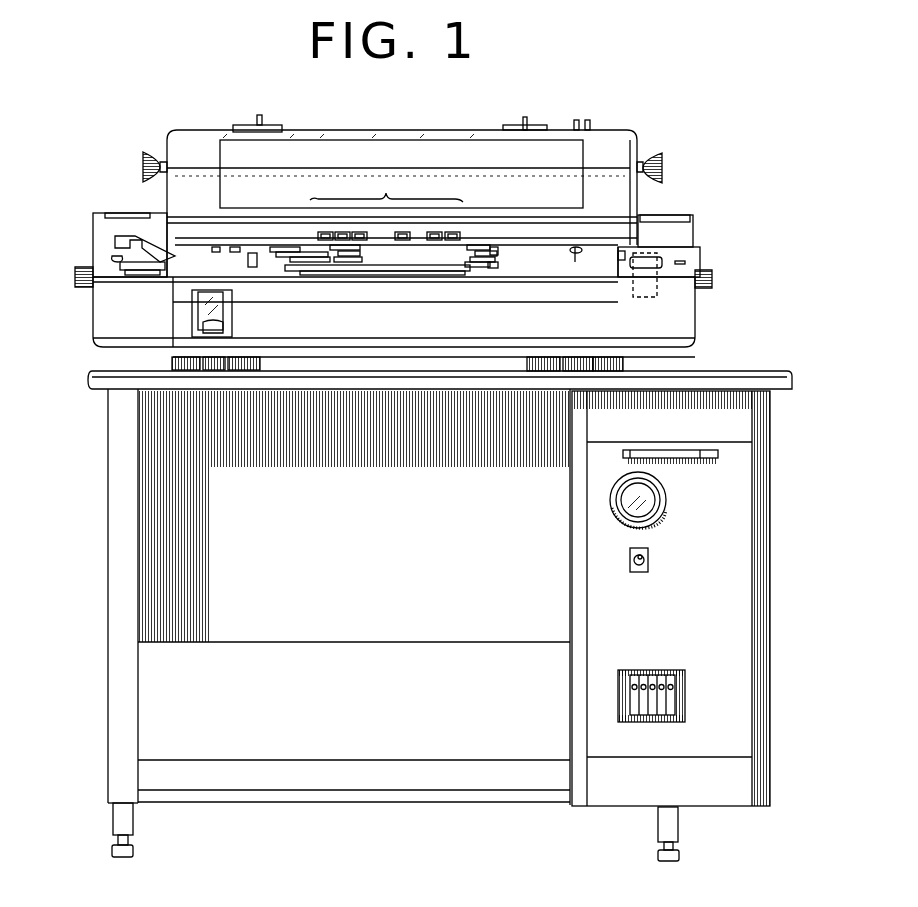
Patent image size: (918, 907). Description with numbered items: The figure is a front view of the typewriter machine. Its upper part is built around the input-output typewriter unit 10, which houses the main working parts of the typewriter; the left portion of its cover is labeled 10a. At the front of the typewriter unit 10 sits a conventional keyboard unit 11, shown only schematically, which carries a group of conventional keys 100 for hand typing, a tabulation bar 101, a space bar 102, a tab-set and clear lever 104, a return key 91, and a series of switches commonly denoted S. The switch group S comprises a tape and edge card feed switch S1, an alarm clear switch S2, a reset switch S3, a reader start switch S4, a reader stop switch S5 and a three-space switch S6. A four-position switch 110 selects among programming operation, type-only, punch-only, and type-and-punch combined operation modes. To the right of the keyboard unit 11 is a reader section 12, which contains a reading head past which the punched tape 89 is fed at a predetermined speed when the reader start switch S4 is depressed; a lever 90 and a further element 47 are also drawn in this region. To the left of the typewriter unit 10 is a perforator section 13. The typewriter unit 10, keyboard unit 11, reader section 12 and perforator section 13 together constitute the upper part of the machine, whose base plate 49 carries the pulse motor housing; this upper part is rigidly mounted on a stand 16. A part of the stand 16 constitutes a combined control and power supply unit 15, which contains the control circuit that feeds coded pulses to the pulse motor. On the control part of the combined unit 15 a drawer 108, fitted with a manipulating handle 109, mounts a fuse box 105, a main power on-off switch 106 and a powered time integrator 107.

The input-output typewriter unit 10 is at (643, 138).
The typewriter upper housing 10a is at (191, 143).
The keyboard unit 11 is at (547, 270).
The reader section 12 is at (680, 324).
The perforator section 13 is at (103, 240).
The combined control and power supply unit 15 is at (607, 808).
The stand 16 is at (108, 636).
The type bar segment 47 is at (496, 250).
The base plate 49 is at (173, 357).
The punched tape 89 is at (645, 295).
The lever 90 is at (648, 270).
The return key 91 is at (492, 270).
The group of conventional keys 100 is at (503, 248).
The tabulation bar 101 is at (297, 268).
The space bar 102 is at (395, 275).
The tab-set and clear lever 104 is at (252, 268).
The fuse box 105 is at (688, 706).
The main power on-off switch 106 is at (650, 558).
The powered time integrator 107 is at (666, 500).
The drawer 108 is at (740, 588).
The manipulating handle 109 is at (718, 456).
The four-position switch 110 is at (577, 264).
The switch group S is at (386, 187).
The tape and edge card feed switch S1 is at (325, 232).
The alarm clear switch S2 is at (343, 232).
The reset switch S3 is at (360, 232).
The reader start switch S4 is at (402, 232).
The reader stop switch S5 is at (434, 232).
The three-space switch S6 is at (452, 232).